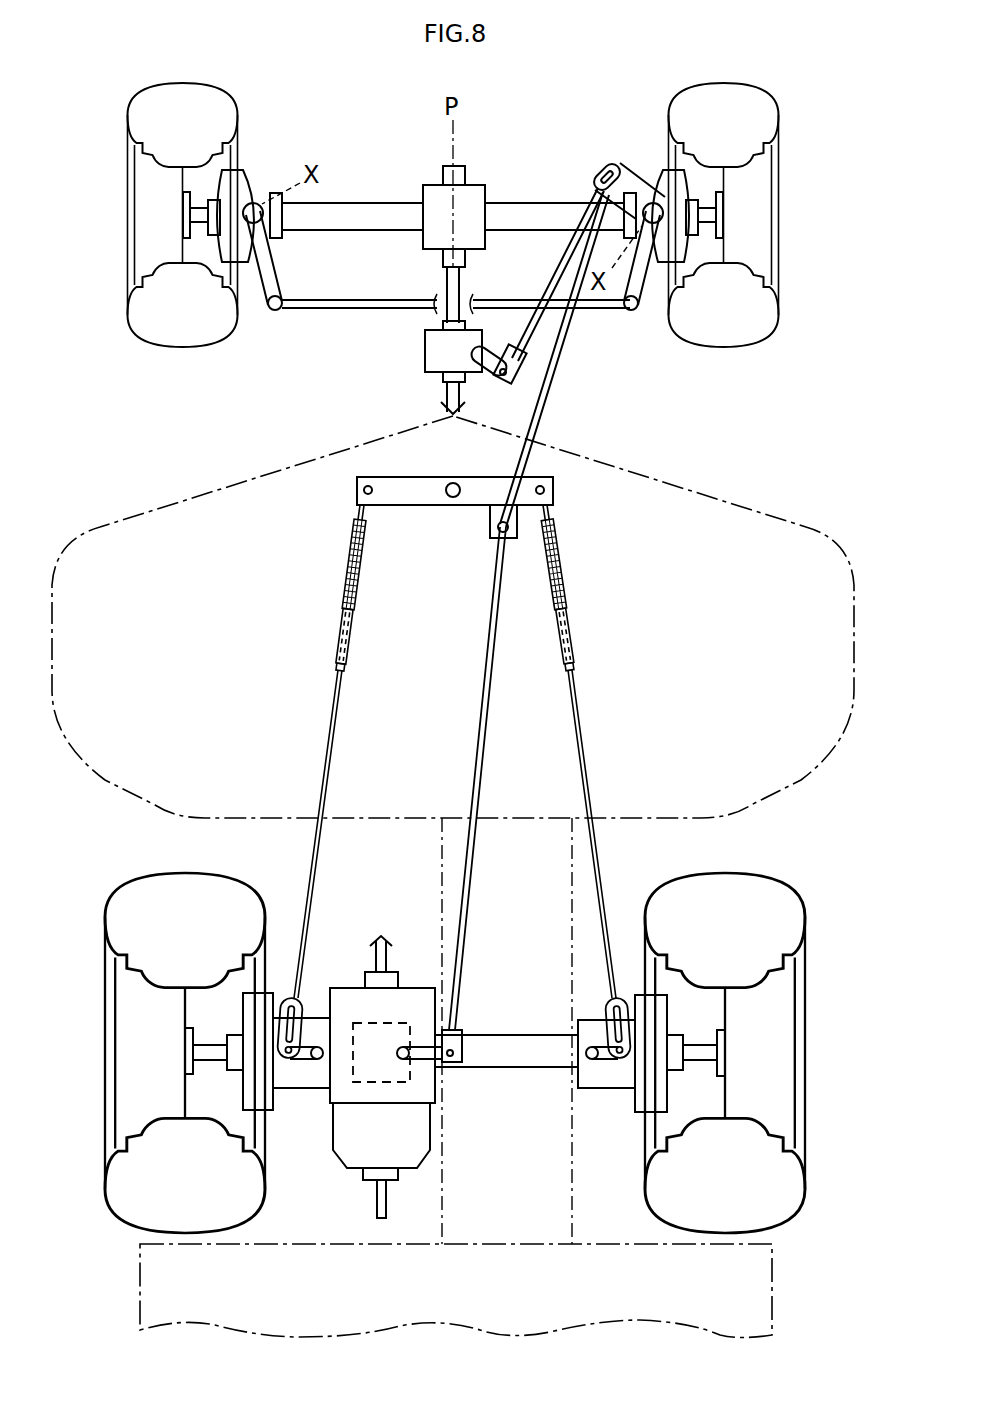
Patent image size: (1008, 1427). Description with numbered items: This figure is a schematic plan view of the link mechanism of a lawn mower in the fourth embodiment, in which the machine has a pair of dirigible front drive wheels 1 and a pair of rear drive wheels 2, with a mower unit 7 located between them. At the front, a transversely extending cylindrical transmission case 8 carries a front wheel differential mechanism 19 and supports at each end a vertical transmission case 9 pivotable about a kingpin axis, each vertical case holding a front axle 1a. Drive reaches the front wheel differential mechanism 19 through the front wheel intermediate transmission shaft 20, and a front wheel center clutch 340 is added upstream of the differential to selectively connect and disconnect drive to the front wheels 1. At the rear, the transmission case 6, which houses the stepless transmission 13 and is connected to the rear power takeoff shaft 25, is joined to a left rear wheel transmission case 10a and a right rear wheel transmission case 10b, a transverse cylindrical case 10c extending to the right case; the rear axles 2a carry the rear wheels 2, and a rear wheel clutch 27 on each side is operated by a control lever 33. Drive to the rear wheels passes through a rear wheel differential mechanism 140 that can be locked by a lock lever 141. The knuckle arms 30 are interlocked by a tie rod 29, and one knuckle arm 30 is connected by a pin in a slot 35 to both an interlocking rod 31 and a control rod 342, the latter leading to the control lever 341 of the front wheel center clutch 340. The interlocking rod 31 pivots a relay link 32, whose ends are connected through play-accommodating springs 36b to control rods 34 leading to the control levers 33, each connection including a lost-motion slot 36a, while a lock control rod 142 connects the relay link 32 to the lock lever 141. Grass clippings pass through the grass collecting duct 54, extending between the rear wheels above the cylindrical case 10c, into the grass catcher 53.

The front drive wheel 1 is at (127, 115).
The front axle 1a is at (190, 214).
The rear drive wheel 2 is at (117, 1192).
The rear axle 2a is at (212, 1050).
The transmission case 6 is at (354, 984).
The mower unit 7 is at (742, 498).
The transverse transmission case 8 is at (370, 203).
The vertical transmission case 9 is at (243, 178).
The left rear wheel transmission case 10a is at (247, 1093).
The right rear wheel transmission case 10b is at (660, 1093).
The transverse cylindrical case 10c is at (506, 1068).
The stepless transmission 13 is at (415, 1168).
The front wheel differential mechanism 19 is at (423, 240).
The front wheel intermediate transmission shaft 20 is at (446, 400).
The rear power takeoff shaft 25 is at (376, 1200).
The rear wheel clutch 27 is at (292, 1088).
The tie rod 29 is at (312, 315).
The knuckle arm 30 is at (272, 268).
The interlocking rod 31 is at (553, 374).
The relay link 32 is at (418, 505).
The control lever 33 is at (303, 1062).
The control rod 34 is at (326, 766).
The slot 35 is at (600, 168).
The slot 36a is at (287, 1030).
The play-accommodating spring 36b is at (343, 597).
The grass catcher 53 is at (775, 1290).
The grass collecting duct 54 is at (442, 893).
The rear wheel differential mechanism 140 is at (390, 1082).
The lock lever 141 is at (432, 1045).
The lock control rod 142 is at (482, 745).
The front wheel center clutch 340 is at (425, 352).
The control lever 341 is at (497, 388).
The control rod 342 is at (553, 262).